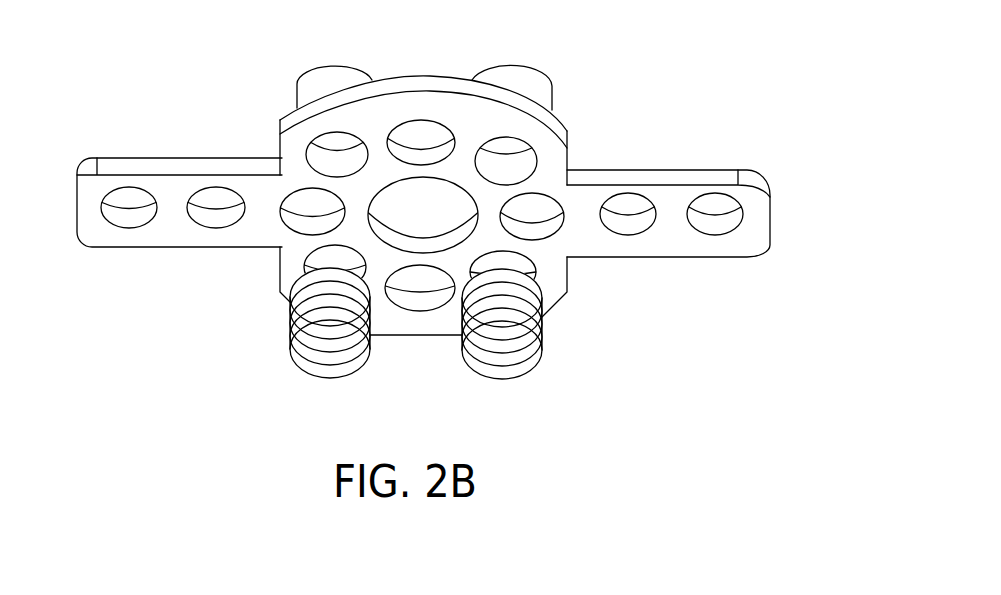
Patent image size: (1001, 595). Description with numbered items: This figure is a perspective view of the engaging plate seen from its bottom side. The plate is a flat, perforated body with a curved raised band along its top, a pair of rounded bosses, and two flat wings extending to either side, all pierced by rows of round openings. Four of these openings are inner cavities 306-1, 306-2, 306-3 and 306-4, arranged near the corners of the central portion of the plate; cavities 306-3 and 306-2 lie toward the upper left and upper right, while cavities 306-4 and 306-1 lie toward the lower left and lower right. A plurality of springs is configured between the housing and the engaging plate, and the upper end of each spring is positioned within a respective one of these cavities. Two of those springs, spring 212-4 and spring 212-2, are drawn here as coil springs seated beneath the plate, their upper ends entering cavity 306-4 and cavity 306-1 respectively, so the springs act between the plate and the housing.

The cavity 306-1 is at (518, 273).
The cavity 306-2 is at (523, 160).
The cavity 306-3 is at (322, 149).
The cavity 306-4 is at (320, 260).
The spring 212-2 is at (530, 359).
The spring 212-4 is at (303, 351).